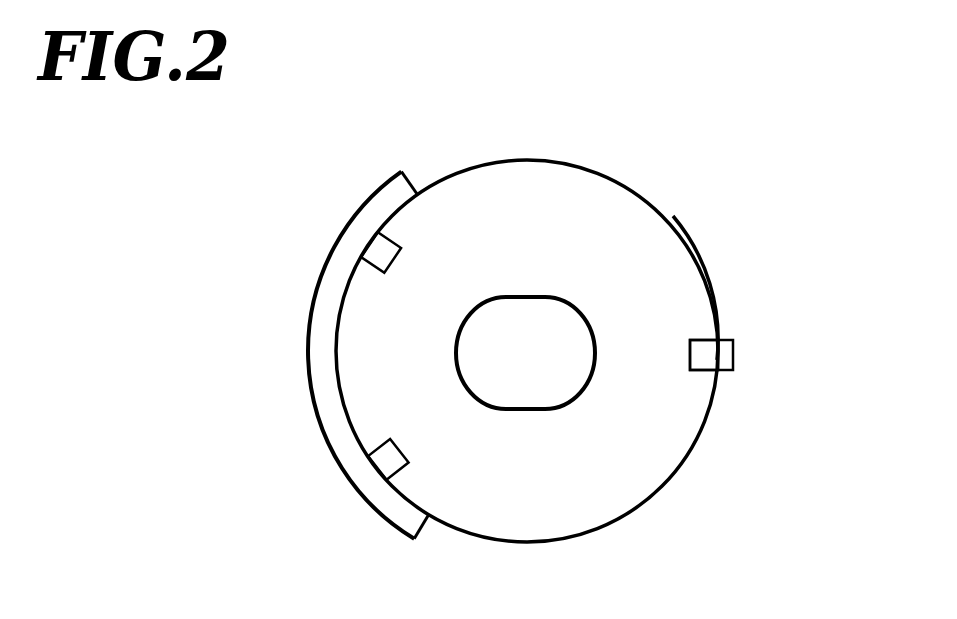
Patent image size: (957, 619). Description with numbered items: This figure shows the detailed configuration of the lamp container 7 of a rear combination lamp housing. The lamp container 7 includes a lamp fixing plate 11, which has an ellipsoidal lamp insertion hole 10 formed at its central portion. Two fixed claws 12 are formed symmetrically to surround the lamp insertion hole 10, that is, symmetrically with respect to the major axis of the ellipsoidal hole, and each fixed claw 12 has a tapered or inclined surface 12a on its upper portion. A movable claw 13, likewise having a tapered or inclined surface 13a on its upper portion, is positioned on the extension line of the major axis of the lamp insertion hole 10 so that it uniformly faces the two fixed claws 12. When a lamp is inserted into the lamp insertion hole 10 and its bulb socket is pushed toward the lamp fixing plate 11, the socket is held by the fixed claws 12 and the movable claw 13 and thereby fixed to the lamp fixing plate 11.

The lamp container 7 is at (672, 208).
The lamp insertion hole 10 is at (573, 302).
The lamp fixing plate 11 is at (690, 316).
The fixed claws 12 is at (382, 272).
The tapered surface 12a is at (388, 246).
The movable claw 13 is at (717, 372).
The tapered surface 13a is at (700, 360).